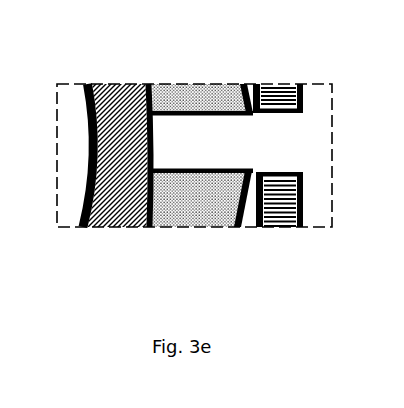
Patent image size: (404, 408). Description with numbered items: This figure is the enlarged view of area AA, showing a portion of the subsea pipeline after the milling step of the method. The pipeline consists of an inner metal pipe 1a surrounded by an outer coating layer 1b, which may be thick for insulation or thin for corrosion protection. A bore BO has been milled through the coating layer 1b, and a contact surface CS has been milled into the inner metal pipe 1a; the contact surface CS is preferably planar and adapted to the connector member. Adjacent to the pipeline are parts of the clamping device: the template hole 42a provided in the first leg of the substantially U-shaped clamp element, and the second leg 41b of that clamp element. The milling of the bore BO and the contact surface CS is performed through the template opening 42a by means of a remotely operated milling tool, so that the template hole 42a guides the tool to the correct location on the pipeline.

The inner metal pipe 1a is at (150, 129).
The outer coating layer 1b is at (182, 98).
The bore BO is at (192, 135).
The contact surface CS is at (158, 147).
The area AA is at (179, 155).
The template hole 42a is at (263, 138).
The second leg 41b is at (283, 222).